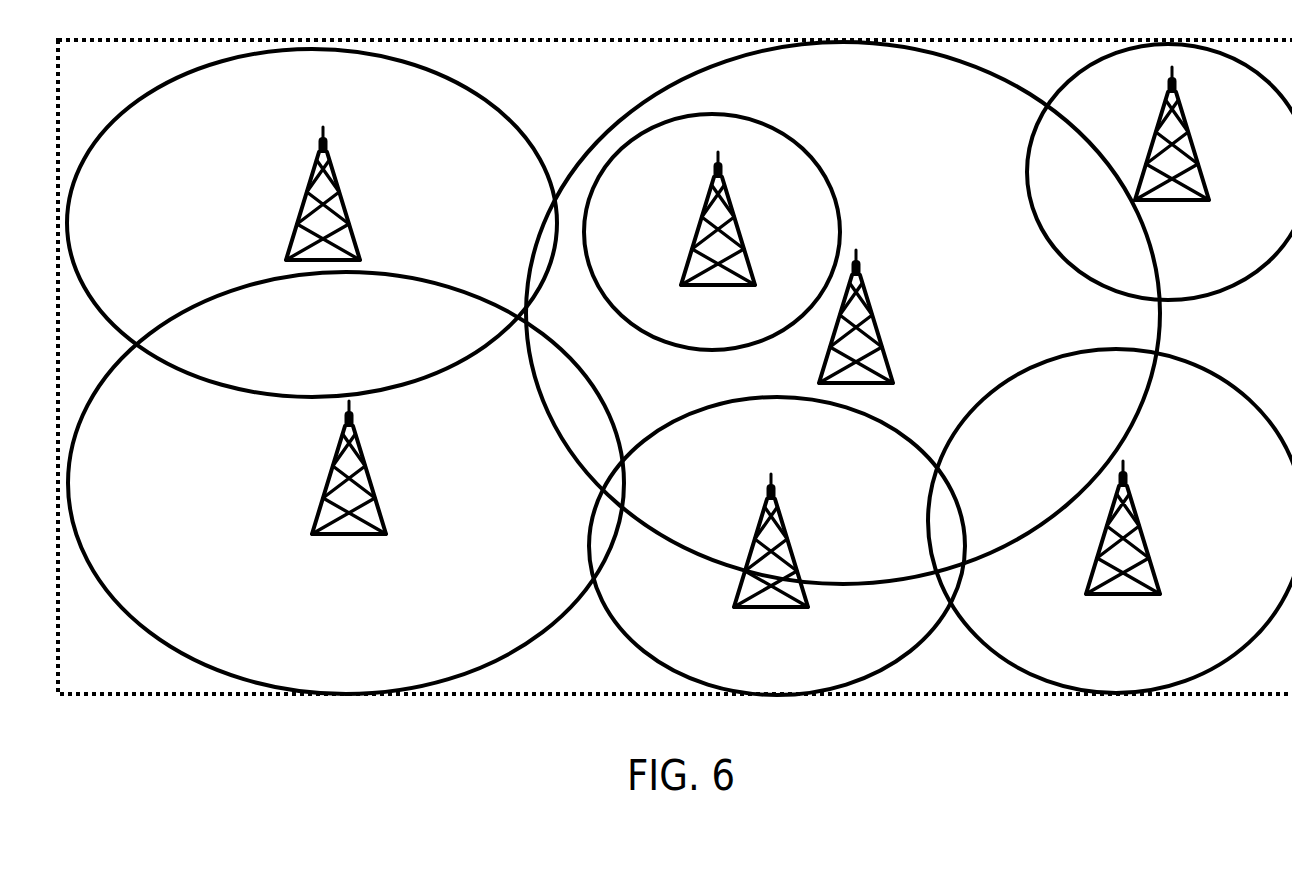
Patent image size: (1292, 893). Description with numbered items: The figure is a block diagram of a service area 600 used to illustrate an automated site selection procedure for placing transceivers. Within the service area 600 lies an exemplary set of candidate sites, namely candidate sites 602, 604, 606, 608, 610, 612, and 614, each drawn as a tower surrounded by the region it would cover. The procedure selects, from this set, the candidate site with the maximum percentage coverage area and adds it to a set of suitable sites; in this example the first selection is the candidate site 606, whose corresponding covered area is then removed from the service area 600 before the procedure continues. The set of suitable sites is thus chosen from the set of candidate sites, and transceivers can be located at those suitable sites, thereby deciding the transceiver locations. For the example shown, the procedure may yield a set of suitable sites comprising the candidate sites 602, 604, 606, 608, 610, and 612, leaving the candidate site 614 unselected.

The service area 600 is at (203, 731).
The candidate site 602 is at (307, 188).
The candidate site 604 is at (327, 483).
The candidate site 606 is at (838, 318).
The candidate site 608 is at (737, 595).
The candidate site 610 is at (1205, 165).
The candidate site 612 is at (1147, 547).
The candidate site 614 is at (700, 217).